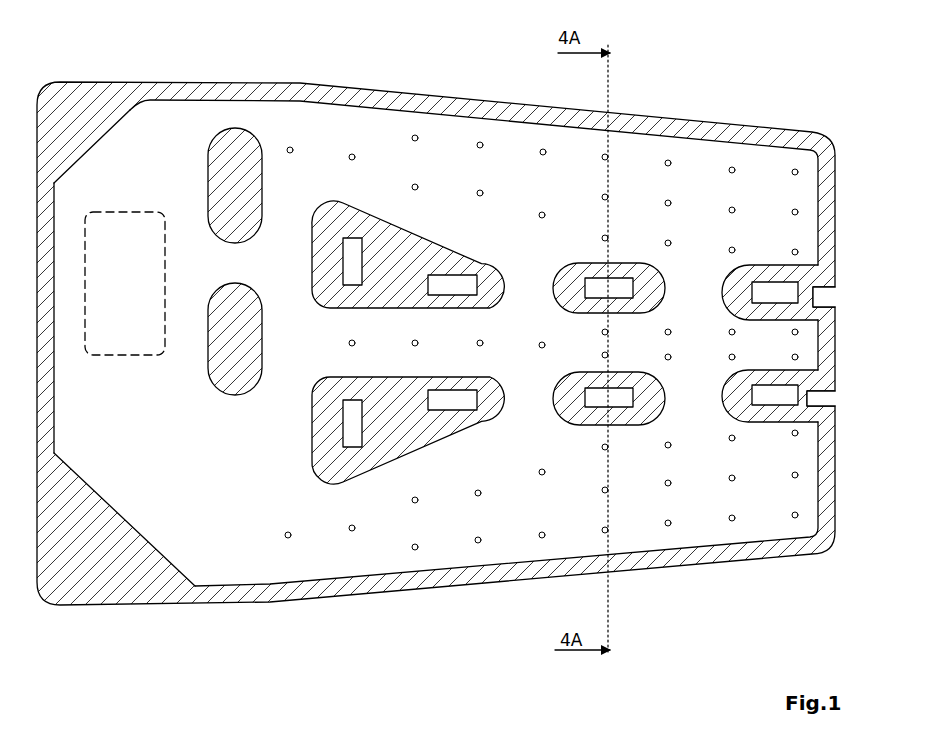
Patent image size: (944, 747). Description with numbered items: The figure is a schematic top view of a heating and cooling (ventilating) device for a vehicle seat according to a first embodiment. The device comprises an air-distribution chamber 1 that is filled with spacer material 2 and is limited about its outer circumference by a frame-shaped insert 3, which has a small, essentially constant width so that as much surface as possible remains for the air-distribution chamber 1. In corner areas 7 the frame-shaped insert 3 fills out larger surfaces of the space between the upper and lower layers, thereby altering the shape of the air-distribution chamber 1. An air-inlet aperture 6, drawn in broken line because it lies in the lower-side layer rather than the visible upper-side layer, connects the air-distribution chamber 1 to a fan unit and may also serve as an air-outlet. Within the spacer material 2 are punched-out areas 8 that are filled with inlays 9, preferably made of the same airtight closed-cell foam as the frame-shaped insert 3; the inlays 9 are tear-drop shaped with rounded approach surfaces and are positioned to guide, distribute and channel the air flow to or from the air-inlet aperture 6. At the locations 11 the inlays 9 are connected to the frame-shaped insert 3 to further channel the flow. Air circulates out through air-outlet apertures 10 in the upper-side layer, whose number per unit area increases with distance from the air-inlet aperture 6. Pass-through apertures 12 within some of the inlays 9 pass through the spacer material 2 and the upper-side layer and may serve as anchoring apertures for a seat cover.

The air-distribution chamber 1 is at (564, 148).
The spacer material 2 is at (758, 177).
The frame-shaped insert 3 is at (790, 137).
The air-inlet aperture 6 is at (150, 212).
The corner areas 7 is at (105, 112).
The punched-out areas 8 is at (357, 257).
The inlays 9 is at (233, 157).
The air-outlet apertures 10 is at (352, 528).
The connection locations 11 is at (815, 302).
The pass-through apertures 12 is at (452, 282).